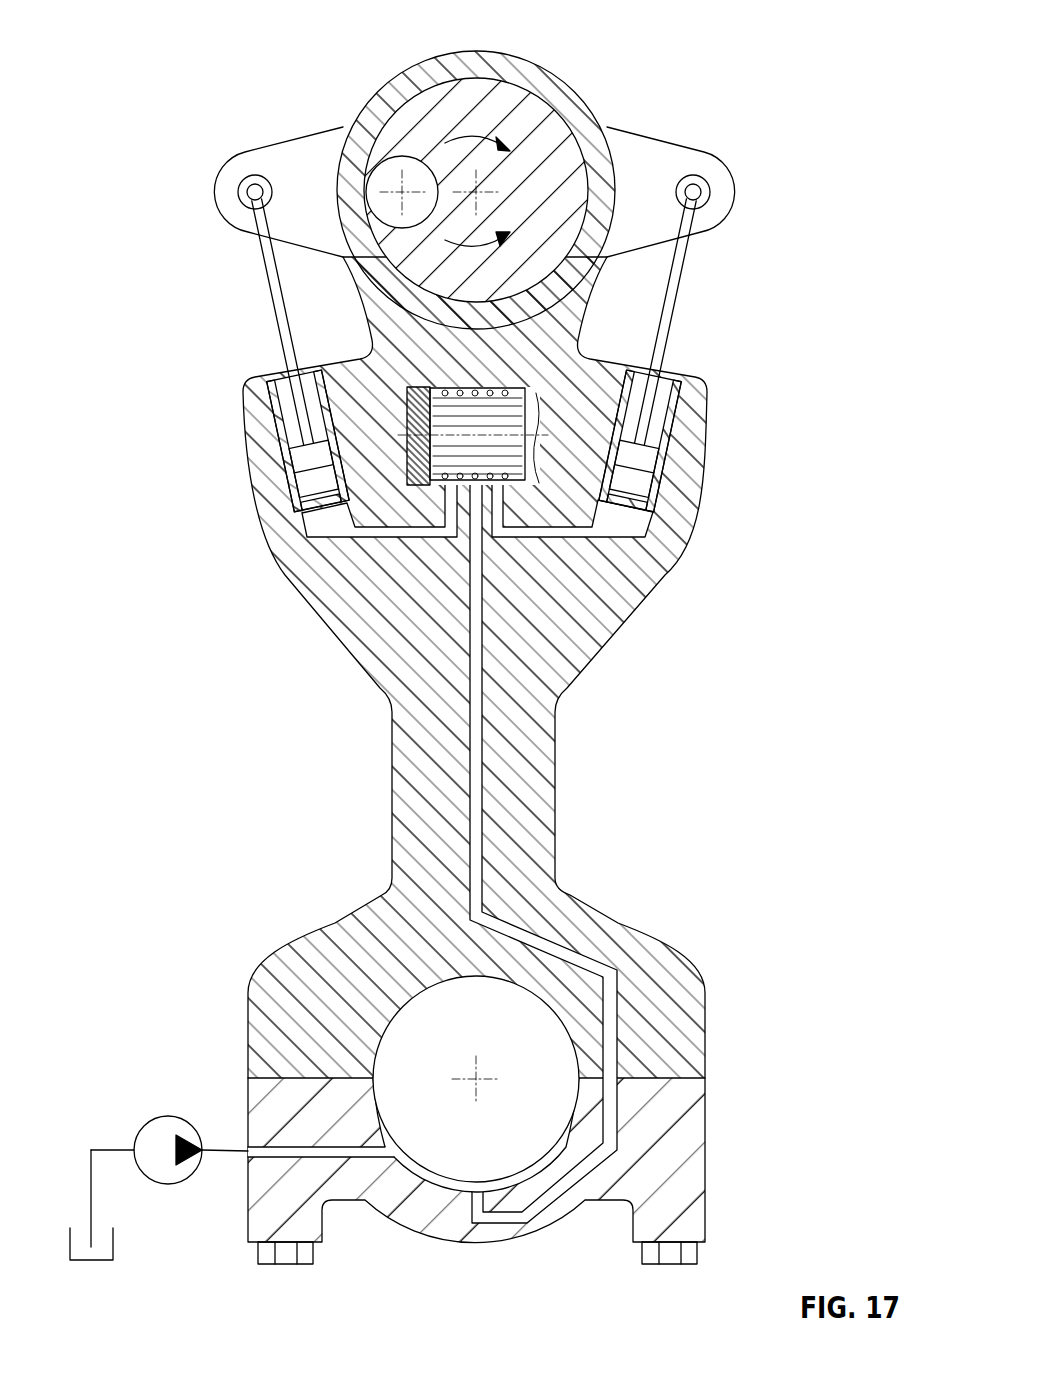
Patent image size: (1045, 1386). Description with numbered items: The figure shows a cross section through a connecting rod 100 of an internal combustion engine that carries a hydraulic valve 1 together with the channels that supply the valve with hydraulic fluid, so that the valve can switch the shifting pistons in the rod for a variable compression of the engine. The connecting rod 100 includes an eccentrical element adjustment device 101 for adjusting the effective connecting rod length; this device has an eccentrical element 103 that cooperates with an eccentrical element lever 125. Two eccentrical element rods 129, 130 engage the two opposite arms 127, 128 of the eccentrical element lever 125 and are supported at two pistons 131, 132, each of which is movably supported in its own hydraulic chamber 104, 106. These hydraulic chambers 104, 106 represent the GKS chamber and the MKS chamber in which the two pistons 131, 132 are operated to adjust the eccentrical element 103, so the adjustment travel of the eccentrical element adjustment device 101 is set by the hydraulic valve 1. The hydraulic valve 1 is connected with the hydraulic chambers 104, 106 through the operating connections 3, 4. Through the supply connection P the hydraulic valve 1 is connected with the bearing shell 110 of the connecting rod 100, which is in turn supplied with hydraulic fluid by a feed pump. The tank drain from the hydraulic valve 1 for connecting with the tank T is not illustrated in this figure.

The connecting rod 100 is at (804, 190).
The eccentrical element adjustment device 101 is at (339, 96).
The eccentrical element 103 is at (520, 112).
The eccentrical element lever 125 is at (474, 167).
The arm of the eccentrical element lever 127 is at (670, 150).
The arm of the eccentrical element lever 128 is at (282, 150).
The eccentrical element rod 129 is at (282, 300).
The eccentrical element rod 130 is at (676, 300).
The piston 131 is at (303, 458).
The piston 132 is at (650, 458).
The hydraulic chamber 104 is at (325, 520).
The hydraulic chamber 106 is at (625, 520).
The operating connection 3 is at (372, 540).
The operating connection 4 is at (583, 545).
The hydraulic valve 1 is at (524, 406).
The supply connection P is at (567, 960).
The bearing shell 110 is at (538, 1050).
The tank T is at (113, 1245).